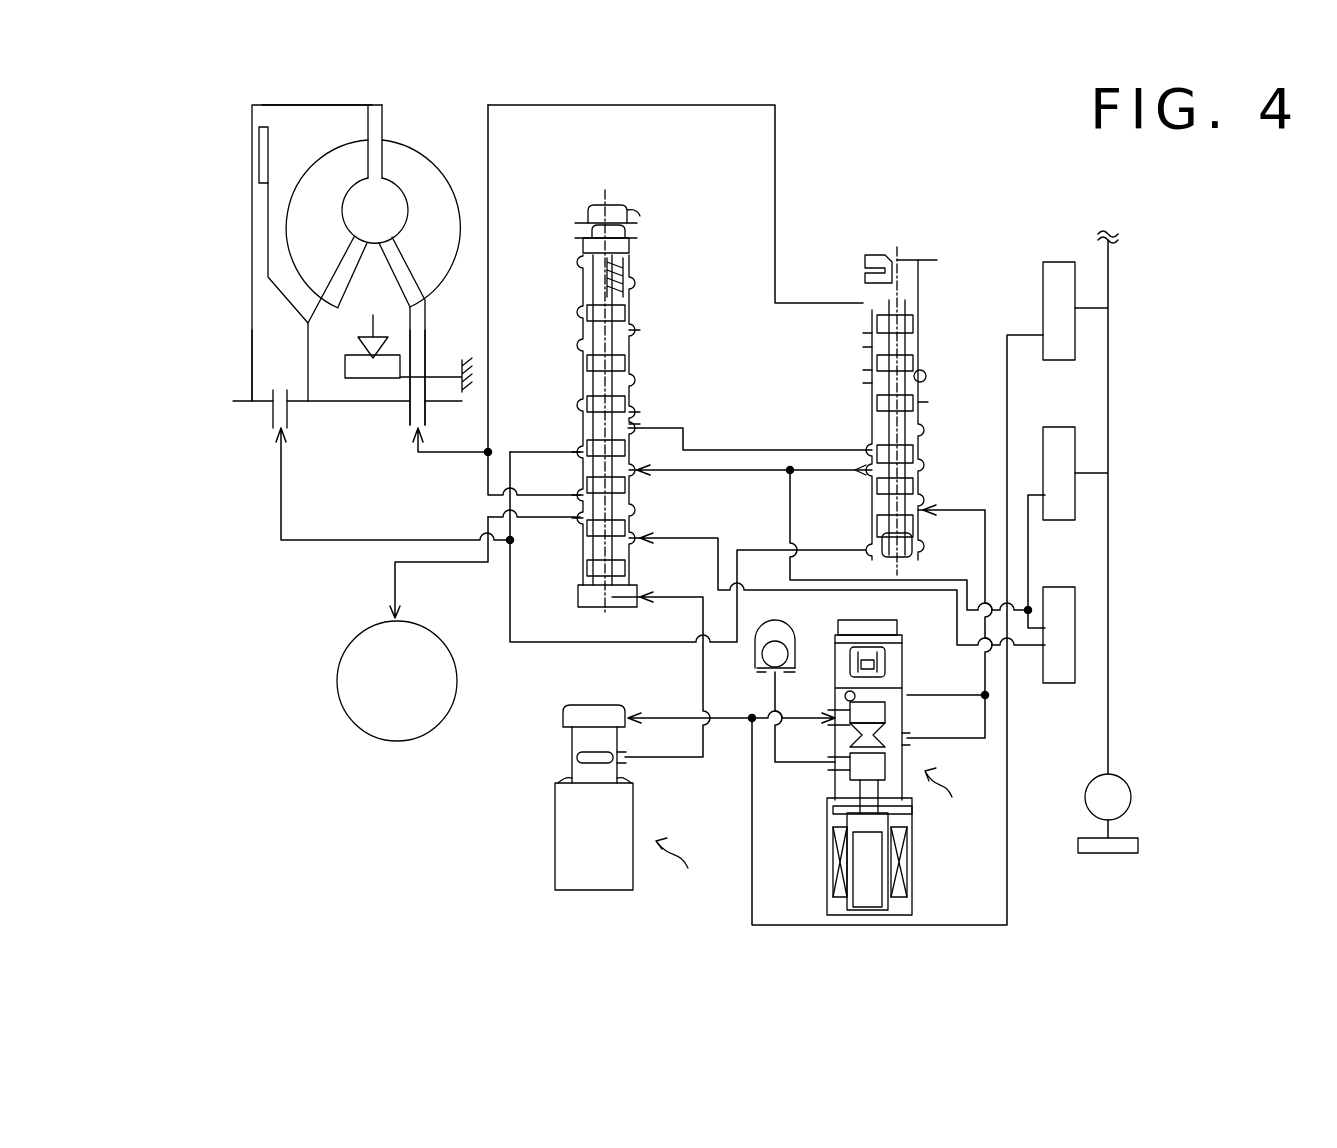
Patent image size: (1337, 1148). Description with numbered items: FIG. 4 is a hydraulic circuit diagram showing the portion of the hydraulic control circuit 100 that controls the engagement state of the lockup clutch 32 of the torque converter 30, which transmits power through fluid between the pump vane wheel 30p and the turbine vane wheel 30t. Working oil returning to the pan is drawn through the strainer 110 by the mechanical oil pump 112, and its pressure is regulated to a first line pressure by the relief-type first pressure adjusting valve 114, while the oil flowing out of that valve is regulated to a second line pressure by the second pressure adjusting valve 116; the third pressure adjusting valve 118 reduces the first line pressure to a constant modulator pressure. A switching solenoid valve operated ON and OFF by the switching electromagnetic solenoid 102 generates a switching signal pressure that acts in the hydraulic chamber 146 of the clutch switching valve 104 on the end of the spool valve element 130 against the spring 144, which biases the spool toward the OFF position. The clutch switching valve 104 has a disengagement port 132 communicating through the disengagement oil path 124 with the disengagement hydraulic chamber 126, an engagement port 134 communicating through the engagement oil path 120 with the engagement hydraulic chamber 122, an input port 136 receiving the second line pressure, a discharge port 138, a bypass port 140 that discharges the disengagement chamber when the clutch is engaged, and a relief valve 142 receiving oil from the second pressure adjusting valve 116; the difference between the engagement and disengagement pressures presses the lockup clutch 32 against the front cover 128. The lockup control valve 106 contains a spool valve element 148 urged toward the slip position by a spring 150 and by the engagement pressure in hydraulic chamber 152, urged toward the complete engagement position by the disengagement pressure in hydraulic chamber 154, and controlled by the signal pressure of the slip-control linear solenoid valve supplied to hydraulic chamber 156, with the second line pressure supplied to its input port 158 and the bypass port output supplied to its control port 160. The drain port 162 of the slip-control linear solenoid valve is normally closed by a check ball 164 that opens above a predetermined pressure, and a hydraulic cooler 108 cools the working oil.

The torque converter 30 is at (432, 113).
The pump vane wheel 30p is at (434, 182).
The turbine vane wheel 30t is at (345, 148).
The lockup clutch 32 is at (233, 180).
The hydraulic control circuit 100 is at (303, 846).
The switching electromagnetic solenoid 102 is at (618, 890).
The clutch switching valve 104 is at (613, 184).
The lockup control valve 106 is at (903, 230).
The hydraulic cooler 108 is at (362, 724).
The strainer 110 is at (1110, 855).
The mechanical oil pump 112 is at (1122, 780).
The first pressure adjusting valve 114 is at (1060, 432).
The second pressure adjusting valve 116 is at (1060, 593).
The third pressure adjusting valve 118 is at (1060, 262).
The engagement oil path 120 is at (423, 342).
The engagement hydraulic chamber 122 is at (298, 103).
The disengagement oil path 124 is at (273, 417).
The disengagement hydraulic chamber 126 is at (270, 340).
The front cover 128 is at (252, 148).
The spool valve element 130 is at (595, 568).
The disengagement port 132 is at (580, 448).
The engagement port 134 is at (580, 497).
The input port 136 is at (637, 475).
The discharge port 138 is at (580, 518).
The bypass port 140 is at (628, 424).
The relief valve 142 is at (640, 543).
The spring 144 is at (613, 285).
The hydraulic chamber 146 is at (620, 603).
The spool valve element 148 is at (912, 402).
The spring 150 is at (919, 366).
The hydraulic chamber 152 is at (890, 308).
The hydraulic chamber 154 is at (920, 556).
The hydraulic chamber 156 is at (925, 508).
The input port 158 is at (866, 475).
The control port 160 is at (867, 445).
The drain port 162 is at (832, 766).
The check ball 164 is at (798, 622).